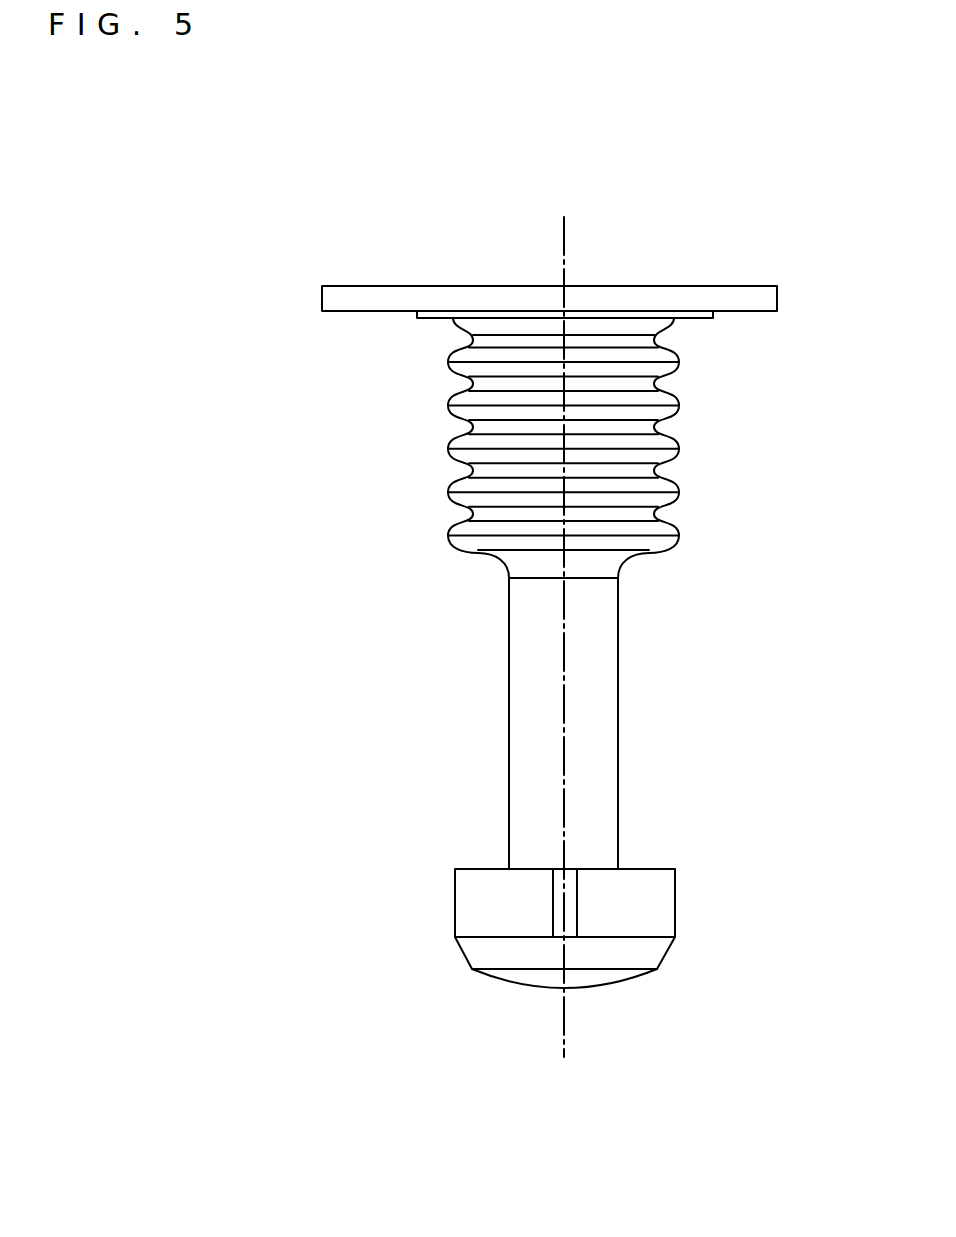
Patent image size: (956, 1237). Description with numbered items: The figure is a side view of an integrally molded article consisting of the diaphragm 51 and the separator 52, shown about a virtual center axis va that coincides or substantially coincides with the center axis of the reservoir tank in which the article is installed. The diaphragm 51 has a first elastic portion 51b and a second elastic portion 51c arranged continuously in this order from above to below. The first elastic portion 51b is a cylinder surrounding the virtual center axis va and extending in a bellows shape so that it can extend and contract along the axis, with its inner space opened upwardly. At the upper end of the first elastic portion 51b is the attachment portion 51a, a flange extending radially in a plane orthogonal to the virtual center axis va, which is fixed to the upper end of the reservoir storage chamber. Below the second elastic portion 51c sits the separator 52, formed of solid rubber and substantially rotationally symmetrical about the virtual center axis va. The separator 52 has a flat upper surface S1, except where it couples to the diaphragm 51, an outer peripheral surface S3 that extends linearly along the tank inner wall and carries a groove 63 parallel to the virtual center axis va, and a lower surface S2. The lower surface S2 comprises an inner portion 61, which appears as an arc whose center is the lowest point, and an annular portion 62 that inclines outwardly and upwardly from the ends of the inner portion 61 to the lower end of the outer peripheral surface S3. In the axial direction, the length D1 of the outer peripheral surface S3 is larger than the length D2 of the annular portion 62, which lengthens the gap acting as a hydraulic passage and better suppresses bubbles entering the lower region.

The diaphragm 51 is at (303, 288).
The attachment portion 51a is at (667, 295).
The first elastic portion 51b is at (675, 485).
The second elastic portion 51c is at (612, 722).
The separator 52 is at (342, 862).
The inner portion 61 is at (523, 977).
The annular portion 62 is at (478, 955).
The groove 63 is at (562, 903).
The upper surface S1 is at (648, 868).
The lower surface S2 is at (515, 1058).
The outer peripheral surface S3 is at (448, 897).
The length of the outer peripheral surface D1 is at (792, 937).
The length of the annular portion D2 is at (663, 969).
The virtual center axis va is at (560, 253).